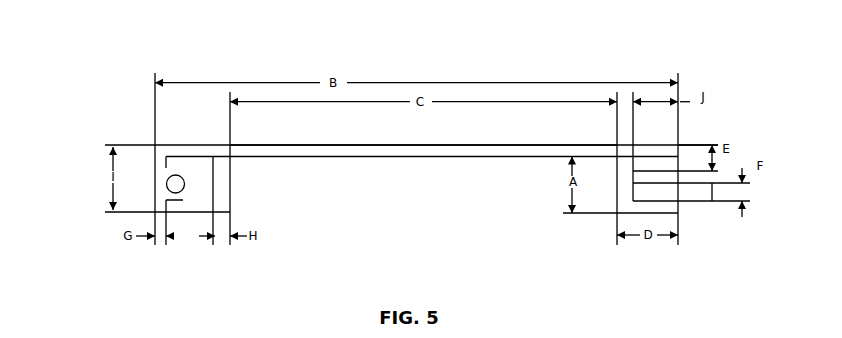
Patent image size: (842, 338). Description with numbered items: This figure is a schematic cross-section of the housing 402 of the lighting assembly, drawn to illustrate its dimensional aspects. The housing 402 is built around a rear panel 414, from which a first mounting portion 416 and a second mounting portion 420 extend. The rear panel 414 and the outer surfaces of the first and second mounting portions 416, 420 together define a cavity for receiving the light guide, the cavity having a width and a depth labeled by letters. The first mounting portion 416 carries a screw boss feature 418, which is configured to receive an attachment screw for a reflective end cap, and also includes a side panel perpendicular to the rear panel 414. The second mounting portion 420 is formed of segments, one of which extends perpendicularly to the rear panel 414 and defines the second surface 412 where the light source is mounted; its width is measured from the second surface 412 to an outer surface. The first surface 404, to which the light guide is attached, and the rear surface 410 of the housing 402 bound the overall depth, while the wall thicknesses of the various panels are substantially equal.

The housing 402 is at (434, 144).
The first surface 404 is at (343, 157).
The rear surface 410 is at (212, 143).
The second surface 412 is at (619, 191).
The rear panel 414 is at (684, 148).
The first mounting portion 416 is at (192, 225).
The screw boss feature 418 is at (189, 182).
The second mounting portion 420 is at (754, 142).